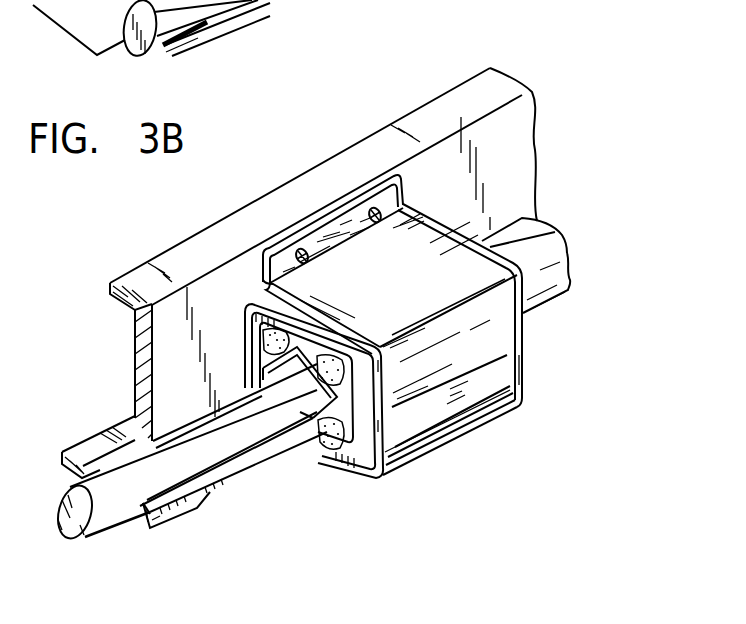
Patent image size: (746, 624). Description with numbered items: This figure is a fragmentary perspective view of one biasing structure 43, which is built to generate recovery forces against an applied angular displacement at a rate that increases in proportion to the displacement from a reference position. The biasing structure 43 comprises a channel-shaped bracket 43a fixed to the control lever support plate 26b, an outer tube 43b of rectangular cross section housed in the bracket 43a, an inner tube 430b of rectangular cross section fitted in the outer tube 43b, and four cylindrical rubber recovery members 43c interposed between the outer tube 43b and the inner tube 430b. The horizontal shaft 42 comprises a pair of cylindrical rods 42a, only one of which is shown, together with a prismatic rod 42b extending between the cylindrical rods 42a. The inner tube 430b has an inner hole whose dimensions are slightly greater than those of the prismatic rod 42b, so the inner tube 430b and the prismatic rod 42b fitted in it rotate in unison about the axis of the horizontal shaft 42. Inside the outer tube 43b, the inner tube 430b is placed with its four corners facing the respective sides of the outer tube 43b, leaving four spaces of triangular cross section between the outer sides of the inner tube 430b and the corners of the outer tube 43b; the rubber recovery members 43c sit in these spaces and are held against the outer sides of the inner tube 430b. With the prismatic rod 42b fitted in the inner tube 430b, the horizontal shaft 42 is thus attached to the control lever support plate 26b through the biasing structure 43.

The control lever support plate 26b is at (440, 90).
The biasing structure 43 is at (470, 437).
The channel-shaped bracket 43a is at (494, 364).
The outer tube 43b is at (483, 228).
The cylindrical rubber recovery members 43c is at (338, 350).
The inner tube 430b is at (343, 392).
The horizontal shaft 42 is at (368, 543).
The cylindrical rods 42a is at (185, 477).
The prismatic rod 42b is at (333, 468).